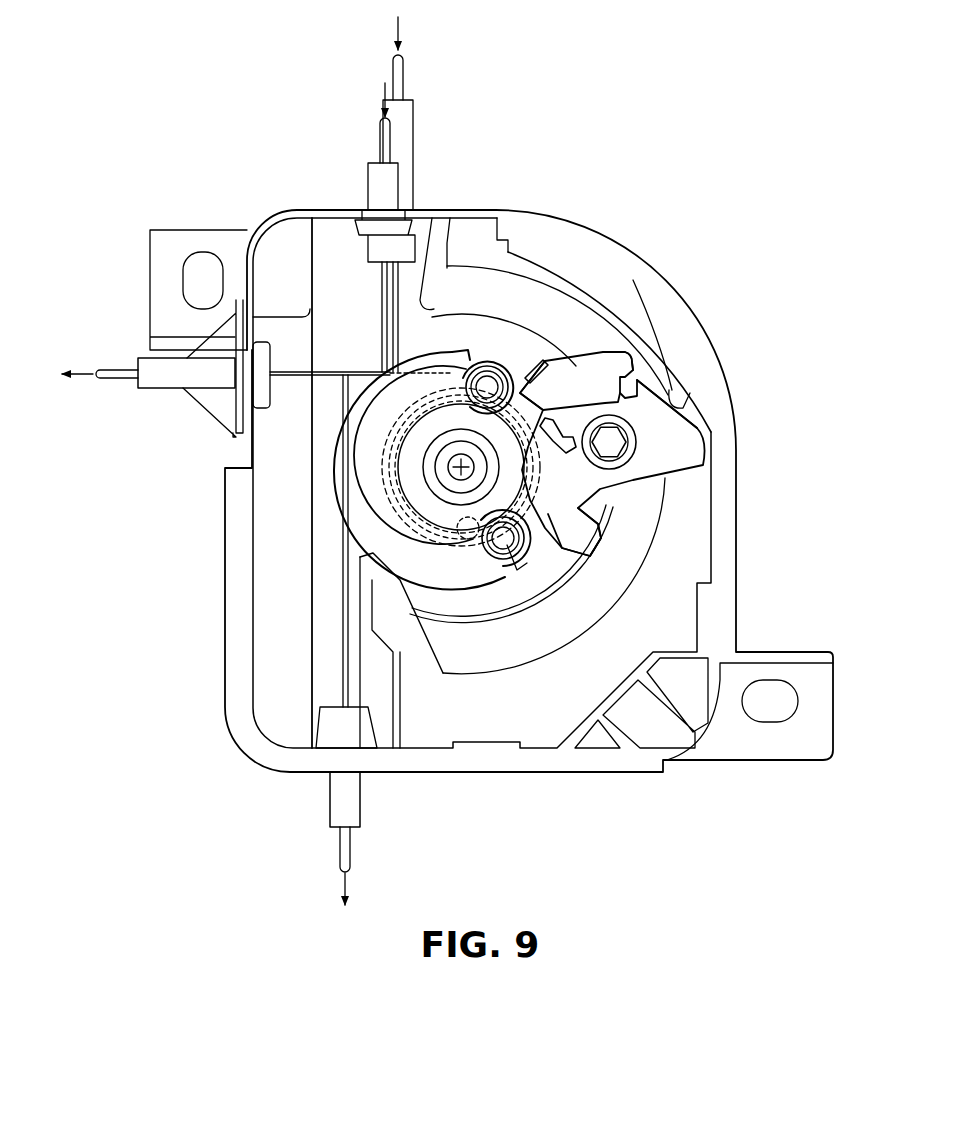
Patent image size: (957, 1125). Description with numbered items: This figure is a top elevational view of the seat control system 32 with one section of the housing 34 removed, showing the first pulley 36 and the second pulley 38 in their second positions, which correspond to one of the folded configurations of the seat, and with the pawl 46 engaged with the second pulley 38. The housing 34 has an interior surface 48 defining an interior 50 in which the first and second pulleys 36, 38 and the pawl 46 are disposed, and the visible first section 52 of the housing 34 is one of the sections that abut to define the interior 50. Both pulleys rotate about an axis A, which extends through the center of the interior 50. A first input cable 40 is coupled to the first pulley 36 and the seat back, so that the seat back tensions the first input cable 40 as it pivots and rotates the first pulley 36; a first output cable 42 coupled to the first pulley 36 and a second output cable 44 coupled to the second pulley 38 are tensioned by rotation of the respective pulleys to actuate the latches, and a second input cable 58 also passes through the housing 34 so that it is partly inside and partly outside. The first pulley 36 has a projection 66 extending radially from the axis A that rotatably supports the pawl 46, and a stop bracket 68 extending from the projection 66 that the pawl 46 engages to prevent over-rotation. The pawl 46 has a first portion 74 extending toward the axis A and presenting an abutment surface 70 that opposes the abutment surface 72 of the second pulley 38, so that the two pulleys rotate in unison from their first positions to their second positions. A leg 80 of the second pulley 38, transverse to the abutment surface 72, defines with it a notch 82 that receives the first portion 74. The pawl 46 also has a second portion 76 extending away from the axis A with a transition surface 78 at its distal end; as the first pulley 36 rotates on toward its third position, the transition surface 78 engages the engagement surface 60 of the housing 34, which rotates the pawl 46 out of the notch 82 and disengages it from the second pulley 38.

The seat control system 32 is at (663, 205).
The housing 34 is at (710, 345).
The first pulley 36 is at (497, 343).
The second pulley 38 is at (530, 372).
The first input cable 40 is at (355, 852).
The first output cable 42 is at (410, 76).
The second output cable 44 is at (377, 143).
The pawl 46 is at (704, 422).
The interior surface 48 is at (254, 668).
The interior 50 is at (278, 573).
The first section 52 is at (631, 762).
The second input cable 58 is at (118, 360).
The engagement surface 60 is at (678, 402).
The projection 66 is at (569, 403).
The stop bracket 68 is at (630, 360).
The abutment surface 70 is at (537, 393).
The abutment surface 72 is at (564, 418).
The first portion 74 is at (535, 445).
The second portion 76 is at (695, 457).
The transition surface 78 is at (700, 430).
The leg 80 is at (588, 535).
The notch 82 is at (553, 483).
The axis A is at (450, 460).